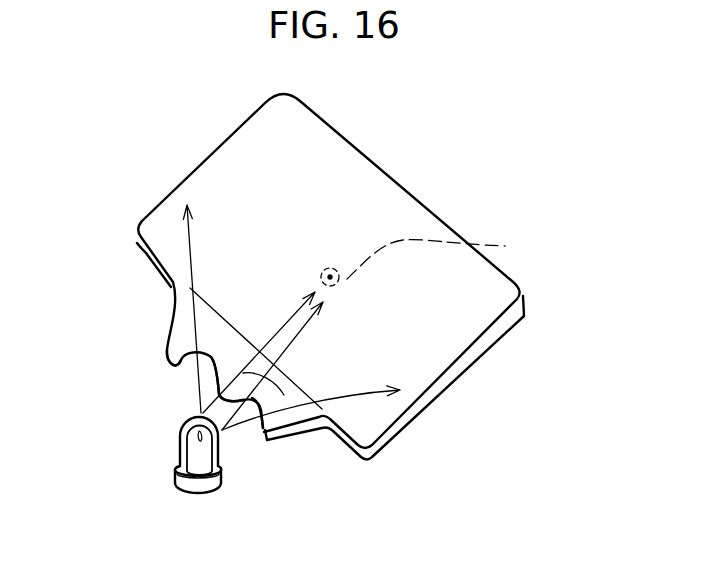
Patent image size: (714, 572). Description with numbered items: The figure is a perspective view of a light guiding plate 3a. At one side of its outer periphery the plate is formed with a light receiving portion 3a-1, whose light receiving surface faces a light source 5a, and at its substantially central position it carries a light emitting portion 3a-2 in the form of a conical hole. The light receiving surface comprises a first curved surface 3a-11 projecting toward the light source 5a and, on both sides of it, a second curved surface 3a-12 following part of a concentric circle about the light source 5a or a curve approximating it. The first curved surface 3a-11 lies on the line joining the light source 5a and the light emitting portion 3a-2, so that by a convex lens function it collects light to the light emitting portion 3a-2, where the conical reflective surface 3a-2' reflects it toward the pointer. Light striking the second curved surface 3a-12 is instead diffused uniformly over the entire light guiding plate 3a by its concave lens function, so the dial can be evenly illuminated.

The light guiding plate 3a is at (507, 296).
The light receiving portion 3a-1 is at (284, 395).
The light emitting portion 3a-2 is at (418, 234).
The conical reflective surface 3a-2' is at (466, 253).
The first curved surface 3a-11 is at (232, 395).
The second curved surface 3a-12 is at (174, 366).
The light source 5a is at (178, 438).